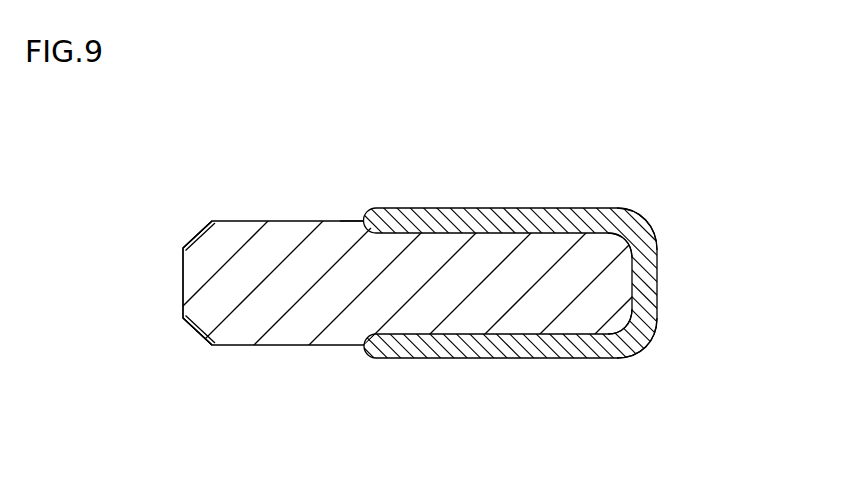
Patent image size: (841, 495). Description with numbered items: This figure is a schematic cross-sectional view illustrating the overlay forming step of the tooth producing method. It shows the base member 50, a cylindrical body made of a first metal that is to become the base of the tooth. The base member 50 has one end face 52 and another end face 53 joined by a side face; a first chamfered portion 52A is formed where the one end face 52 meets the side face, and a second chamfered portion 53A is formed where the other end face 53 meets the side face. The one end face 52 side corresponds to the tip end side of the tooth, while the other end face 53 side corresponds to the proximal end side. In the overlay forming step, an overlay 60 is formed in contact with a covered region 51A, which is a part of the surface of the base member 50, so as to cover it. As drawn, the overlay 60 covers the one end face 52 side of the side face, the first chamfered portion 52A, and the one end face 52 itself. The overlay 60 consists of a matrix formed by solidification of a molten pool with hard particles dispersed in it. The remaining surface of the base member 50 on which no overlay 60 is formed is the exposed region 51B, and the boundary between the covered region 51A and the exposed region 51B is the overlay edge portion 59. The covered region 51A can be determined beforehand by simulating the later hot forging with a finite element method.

The base member 50 is at (237, 202).
The covered region 51A is at (435, 230).
The exposed region 51B is at (286, 221).
The one end face 52 is at (637, 285).
The first chamfered portion 52A is at (643, 237).
The other end face 53 is at (182, 287).
The second chamfered portion 53A is at (192, 233).
The overlay edge portion 59 is at (357, 213).
The overlay 60 is at (506, 218).